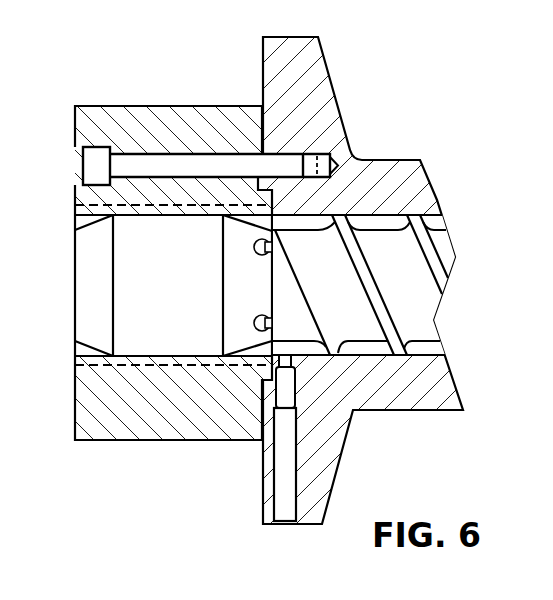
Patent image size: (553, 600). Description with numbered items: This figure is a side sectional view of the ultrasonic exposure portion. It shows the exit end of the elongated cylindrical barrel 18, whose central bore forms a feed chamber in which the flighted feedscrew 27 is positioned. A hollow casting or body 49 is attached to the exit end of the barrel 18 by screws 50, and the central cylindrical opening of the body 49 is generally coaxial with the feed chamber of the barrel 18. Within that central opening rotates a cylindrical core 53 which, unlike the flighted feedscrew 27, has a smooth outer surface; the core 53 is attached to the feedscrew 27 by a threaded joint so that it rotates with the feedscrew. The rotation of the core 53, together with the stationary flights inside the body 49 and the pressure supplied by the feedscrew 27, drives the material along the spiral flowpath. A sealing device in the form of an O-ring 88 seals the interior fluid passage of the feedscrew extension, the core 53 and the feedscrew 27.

The barrel 18 is at (303, 108).
The feedscrew 27 is at (393, 278).
The body 49 is at (132, 130).
The screws 50 is at (180, 167).
The core 53 is at (174, 336).
The O-ring 88 is at (258, 323).